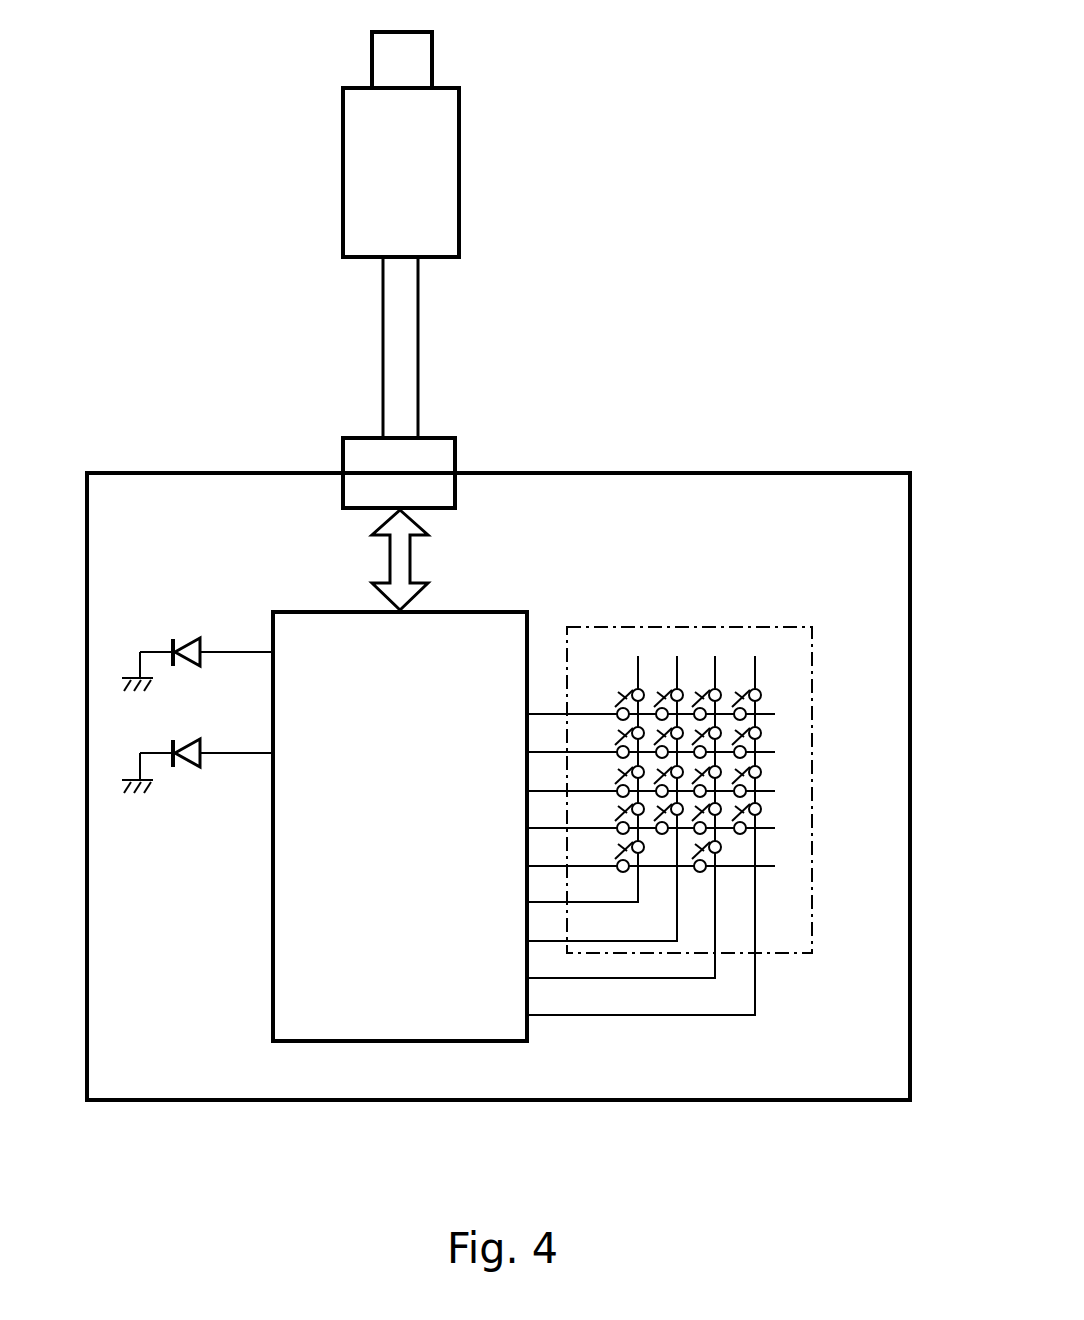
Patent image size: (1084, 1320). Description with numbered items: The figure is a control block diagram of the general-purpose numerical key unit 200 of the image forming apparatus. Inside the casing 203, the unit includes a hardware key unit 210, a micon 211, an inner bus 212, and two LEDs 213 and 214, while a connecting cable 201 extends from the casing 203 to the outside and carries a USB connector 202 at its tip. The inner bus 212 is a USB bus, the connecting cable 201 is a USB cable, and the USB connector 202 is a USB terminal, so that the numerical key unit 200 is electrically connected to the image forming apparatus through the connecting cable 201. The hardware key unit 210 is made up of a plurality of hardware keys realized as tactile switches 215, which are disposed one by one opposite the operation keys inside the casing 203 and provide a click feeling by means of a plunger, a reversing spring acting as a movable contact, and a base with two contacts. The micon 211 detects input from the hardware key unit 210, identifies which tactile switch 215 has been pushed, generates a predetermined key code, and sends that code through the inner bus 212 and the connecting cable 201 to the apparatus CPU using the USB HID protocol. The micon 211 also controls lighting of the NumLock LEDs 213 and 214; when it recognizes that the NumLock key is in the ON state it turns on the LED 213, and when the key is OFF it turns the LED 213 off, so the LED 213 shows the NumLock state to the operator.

The general-purpose numerical key unit 200 is at (738, 112).
The connecting cable 201 is at (420, 330).
The USB connector 202 is at (459, 160).
The casing 203 is at (626, 1102).
The hardware key unit 210 is at (745, 627).
The micon 211 is at (272, 988).
The inner bus 212 is at (410, 560).
The LED 213 is at (192, 640).
The LED 214 is at (192, 766).
The tactile switch 215 is at (761, 808).